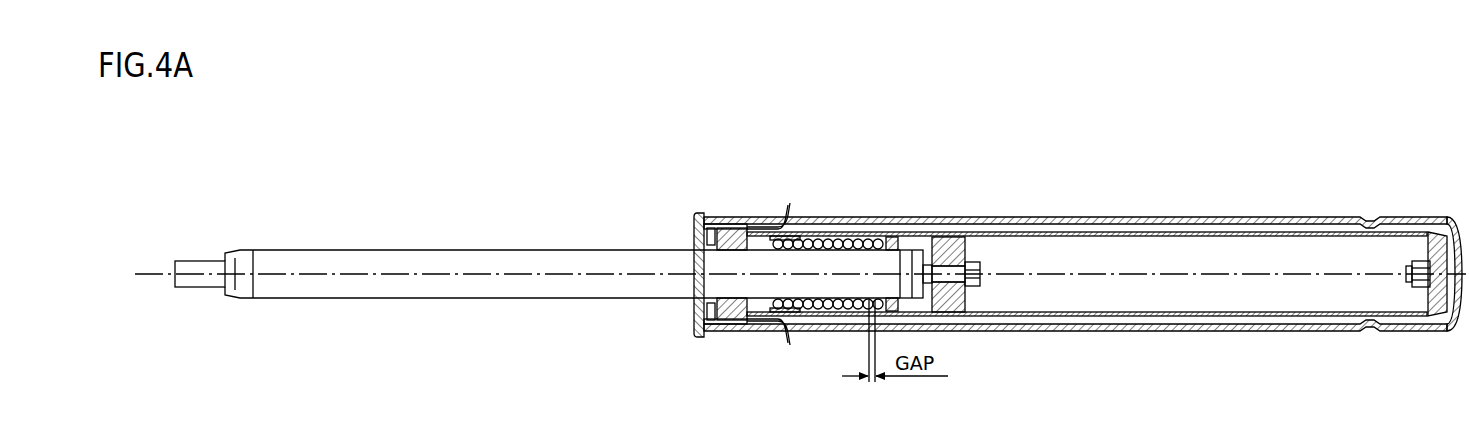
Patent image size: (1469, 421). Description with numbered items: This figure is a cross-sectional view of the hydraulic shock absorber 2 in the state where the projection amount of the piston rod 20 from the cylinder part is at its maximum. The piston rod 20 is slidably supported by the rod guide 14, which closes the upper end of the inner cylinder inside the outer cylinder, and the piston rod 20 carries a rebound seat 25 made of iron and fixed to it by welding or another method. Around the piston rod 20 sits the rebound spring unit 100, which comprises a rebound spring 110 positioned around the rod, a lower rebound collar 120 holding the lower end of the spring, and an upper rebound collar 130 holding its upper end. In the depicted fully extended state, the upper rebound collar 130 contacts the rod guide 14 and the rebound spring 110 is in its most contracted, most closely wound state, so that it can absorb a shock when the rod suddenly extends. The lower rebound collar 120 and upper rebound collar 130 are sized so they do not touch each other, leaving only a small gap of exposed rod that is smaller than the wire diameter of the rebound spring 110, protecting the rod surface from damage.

The hydraulic shock absorber 2 is at (312, 151).
The piston rod 20 is at (595, 250).
The rebound seat 25 is at (935, 220).
The rod guide 14 is at (732, 222).
The rebound spring unit 100 is at (935, 136).
The rebound spring 110 is at (840, 240).
The lower rebound collar 120 is at (890, 237).
The upper rebound collar 130 is at (773, 218).